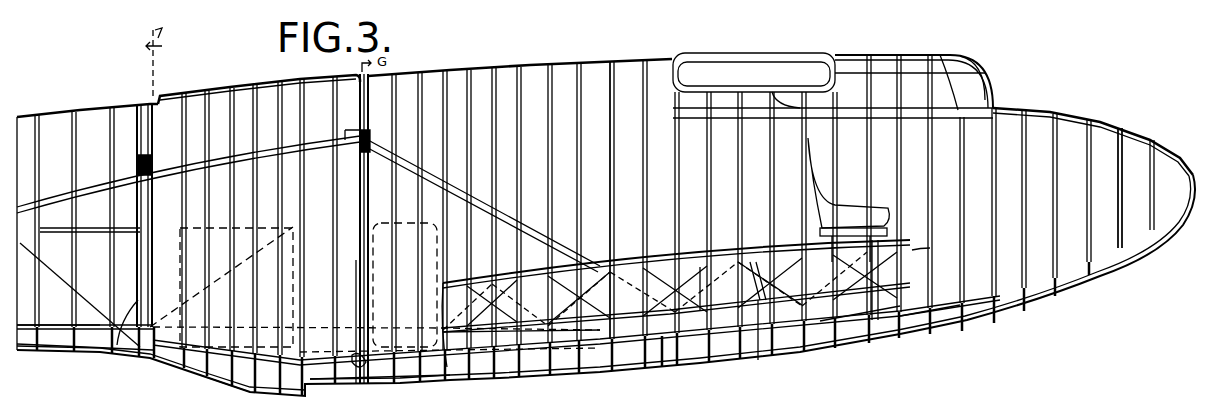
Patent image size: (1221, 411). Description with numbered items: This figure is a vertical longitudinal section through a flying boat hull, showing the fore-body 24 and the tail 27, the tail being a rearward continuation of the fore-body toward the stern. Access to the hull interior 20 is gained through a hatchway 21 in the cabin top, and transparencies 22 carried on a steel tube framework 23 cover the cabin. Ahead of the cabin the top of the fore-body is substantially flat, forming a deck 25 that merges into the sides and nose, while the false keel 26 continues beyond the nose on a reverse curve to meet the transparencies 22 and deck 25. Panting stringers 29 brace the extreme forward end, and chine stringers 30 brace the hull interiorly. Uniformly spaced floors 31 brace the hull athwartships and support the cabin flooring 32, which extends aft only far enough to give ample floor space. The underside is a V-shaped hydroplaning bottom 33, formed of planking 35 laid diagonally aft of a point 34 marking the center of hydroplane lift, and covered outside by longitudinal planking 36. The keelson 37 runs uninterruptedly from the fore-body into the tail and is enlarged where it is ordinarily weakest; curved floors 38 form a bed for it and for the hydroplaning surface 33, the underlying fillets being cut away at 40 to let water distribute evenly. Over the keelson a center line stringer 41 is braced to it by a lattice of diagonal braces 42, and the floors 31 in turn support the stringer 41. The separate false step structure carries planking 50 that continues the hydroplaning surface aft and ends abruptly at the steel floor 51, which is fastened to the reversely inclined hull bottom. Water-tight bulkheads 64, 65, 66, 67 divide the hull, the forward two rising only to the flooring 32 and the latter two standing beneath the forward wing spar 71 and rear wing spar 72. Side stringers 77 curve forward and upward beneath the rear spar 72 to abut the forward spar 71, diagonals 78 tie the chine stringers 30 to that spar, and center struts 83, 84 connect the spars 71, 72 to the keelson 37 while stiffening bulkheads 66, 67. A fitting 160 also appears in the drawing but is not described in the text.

The hull interior 20 is at (628, 90).
The hatchway 21 is at (720, 68).
The transparencies 22 is at (895, 62).
The steel tube framework 23 is at (978, 58).
The fore-body 24 is at (531, 61).
The deck 25 is at (1092, 109).
The false keel 26 is at (1100, 270).
The tail 27 is at (74, 105).
The panting stringers 29 is at (1128, 212).
The chine stringers 30 is at (758, 305).
The floors 31 is at (702, 262).
The cabin flooring 32 is at (915, 250).
The hydroplaning bottom 33 is at (1064, 301).
The point 34 is at (865, 340).
The planking 35 is at (940, 332).
The longitudinal planking 36 is at (226, 380).
The keelson 37 is at (57, 330).
The floors 38 is at (662, 355).
The cut-away 40 is at (505, 367).
The center line stringer 41 is at (606, 265).
The diagonal braces 42 is at (750, 258).
The false step planking 50 is at (417, 378).
The false step steel floor 51 is at (318, 382).
The bulkhead 64 is at (875, 285).
The bulkhead 65 is at (548, 318).
The bulkhead 66 is at (366, 272).
The bulkhead 67 is at (138, 300).
The forward wing spar 71 is at (368, 135).
The rear wing spar 72 is at (140, 160).
The side stringers 77 is at (218, 160).
The diagonals 78 is at (455, 190).
The center strut 83 is at (360, 213).
The center strut 84 is at (140, 230).
The drain fitting 160 is at (400, 370).